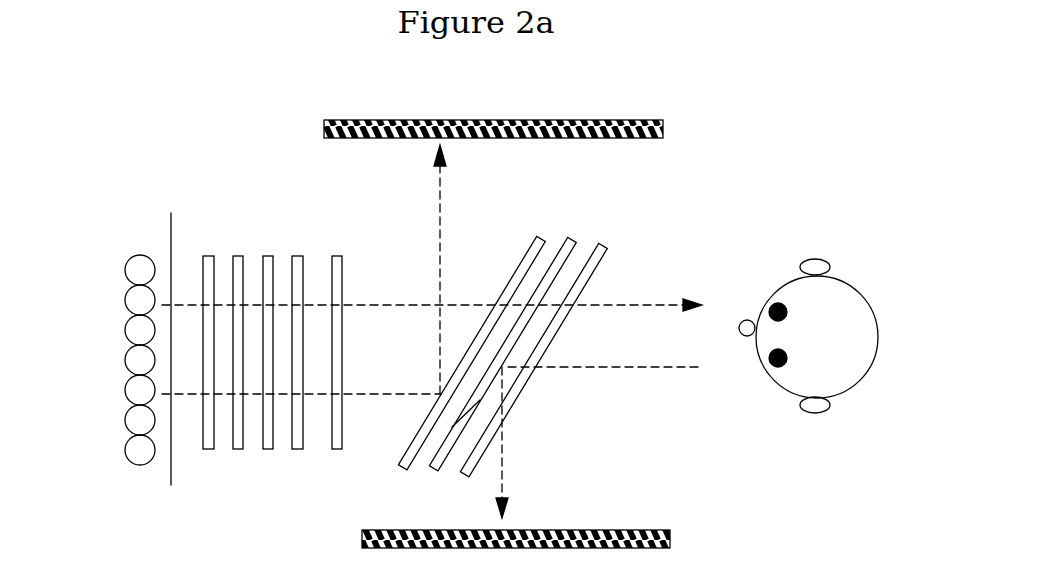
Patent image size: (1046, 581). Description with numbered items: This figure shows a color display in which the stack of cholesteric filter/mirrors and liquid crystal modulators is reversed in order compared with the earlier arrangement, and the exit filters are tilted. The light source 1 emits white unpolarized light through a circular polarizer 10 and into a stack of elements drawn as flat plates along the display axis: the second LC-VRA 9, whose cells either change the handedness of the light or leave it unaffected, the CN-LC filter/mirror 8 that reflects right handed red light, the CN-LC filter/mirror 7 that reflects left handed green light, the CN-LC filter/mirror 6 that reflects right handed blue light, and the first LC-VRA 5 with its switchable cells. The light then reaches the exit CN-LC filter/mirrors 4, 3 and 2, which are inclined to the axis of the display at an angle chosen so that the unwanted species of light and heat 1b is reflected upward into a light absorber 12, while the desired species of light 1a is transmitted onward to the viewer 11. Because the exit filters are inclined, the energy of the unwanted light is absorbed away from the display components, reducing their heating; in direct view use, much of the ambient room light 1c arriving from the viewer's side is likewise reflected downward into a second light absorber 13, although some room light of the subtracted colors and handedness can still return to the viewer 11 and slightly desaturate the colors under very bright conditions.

The light source 1 is at (127, 266).
The desired species of light 1a is at (642, 307).
The unwanted species of light and heat 1b is at (438, 242).
The ambient room light 1c is at (575, 367).
The first CN-LC filter/mirror 2 is at (602, 243).
The second CN-LC filter/mirror 3 is at (563, 253).
The third CN-LC filter/mirror 4 is at (407, 470).
The first LC-VRA 5 is at (338, 449).
The CN-LC filter/mirror 6 is at (299, 449).
The CN-LC filter/mirror 7 is at (271, 257).
The last CN-LC filter/mirror 8 is at (237, 258).
The second LC-VRA 9 is at (204, 449).
The circular polarizer 10 is at (172, 242).
The viewer 11 is at (785, 285).
The light absorber 12 is at (333, 122).
The light absorber 13 is at (670, 532).